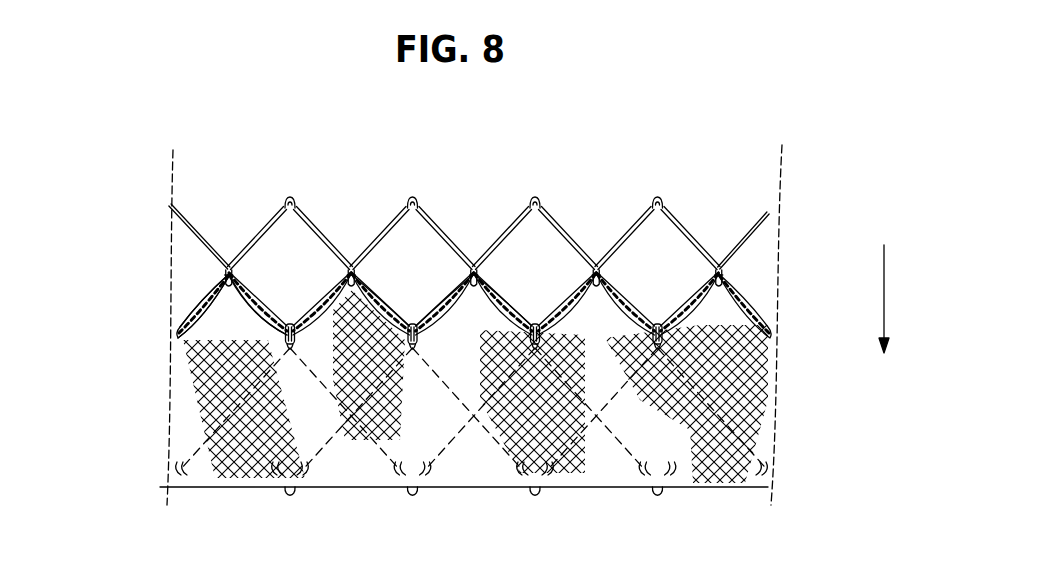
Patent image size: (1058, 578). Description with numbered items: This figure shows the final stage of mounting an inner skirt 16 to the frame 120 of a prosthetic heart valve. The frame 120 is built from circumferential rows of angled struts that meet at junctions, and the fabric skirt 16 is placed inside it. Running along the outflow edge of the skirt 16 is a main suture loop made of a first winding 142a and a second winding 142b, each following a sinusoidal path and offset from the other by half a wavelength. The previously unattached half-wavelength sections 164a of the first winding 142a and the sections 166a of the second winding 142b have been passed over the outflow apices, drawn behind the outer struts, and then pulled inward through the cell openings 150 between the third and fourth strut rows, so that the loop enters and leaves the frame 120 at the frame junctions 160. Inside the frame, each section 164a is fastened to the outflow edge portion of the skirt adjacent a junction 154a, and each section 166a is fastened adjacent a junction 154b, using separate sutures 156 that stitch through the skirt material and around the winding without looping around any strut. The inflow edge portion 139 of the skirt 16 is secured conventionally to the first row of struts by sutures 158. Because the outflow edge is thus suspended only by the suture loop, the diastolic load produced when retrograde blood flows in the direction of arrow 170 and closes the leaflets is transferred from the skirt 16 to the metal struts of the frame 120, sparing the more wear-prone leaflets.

The inner skirt 16 is at (725, 450).
The frame 120 is at (752, 240).
The inflow edge portion 139 is at (745, 470).
The first winding 142a is at (185, 305).
The second winding 142b is at (245, 316).
The cell openings 150 is at (722, 273).
The frame junction 154a is at (414, 324).
The frame junction 154b is at (291, 324).
The sutures 156 is at (438, 322).
The sutures 158 is at (303, 489).
The frame junctions 160 is at (351, 266).
The half-wavelength sections 164a is at (210, 313).
The half-wavelength sections 166a is at (325, 320).
The arrow 170 is at (886, 279).